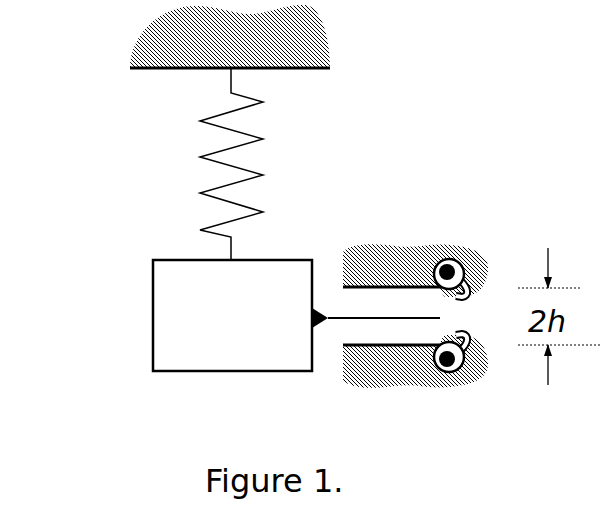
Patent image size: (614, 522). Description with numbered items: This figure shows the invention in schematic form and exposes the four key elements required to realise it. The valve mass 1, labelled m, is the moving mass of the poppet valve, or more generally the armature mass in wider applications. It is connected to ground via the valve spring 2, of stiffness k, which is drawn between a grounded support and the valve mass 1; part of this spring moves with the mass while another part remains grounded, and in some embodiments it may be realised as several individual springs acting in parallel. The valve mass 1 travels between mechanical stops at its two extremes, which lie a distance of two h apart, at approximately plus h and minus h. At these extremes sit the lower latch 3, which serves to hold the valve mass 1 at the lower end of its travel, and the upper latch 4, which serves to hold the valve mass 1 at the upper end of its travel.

The valve mass 1 is at (172, 338).
The valve spring 2 is at (190, 153).
The lower latch 3 is at (472, 378).
The upper latch 4 is at (473, 255).